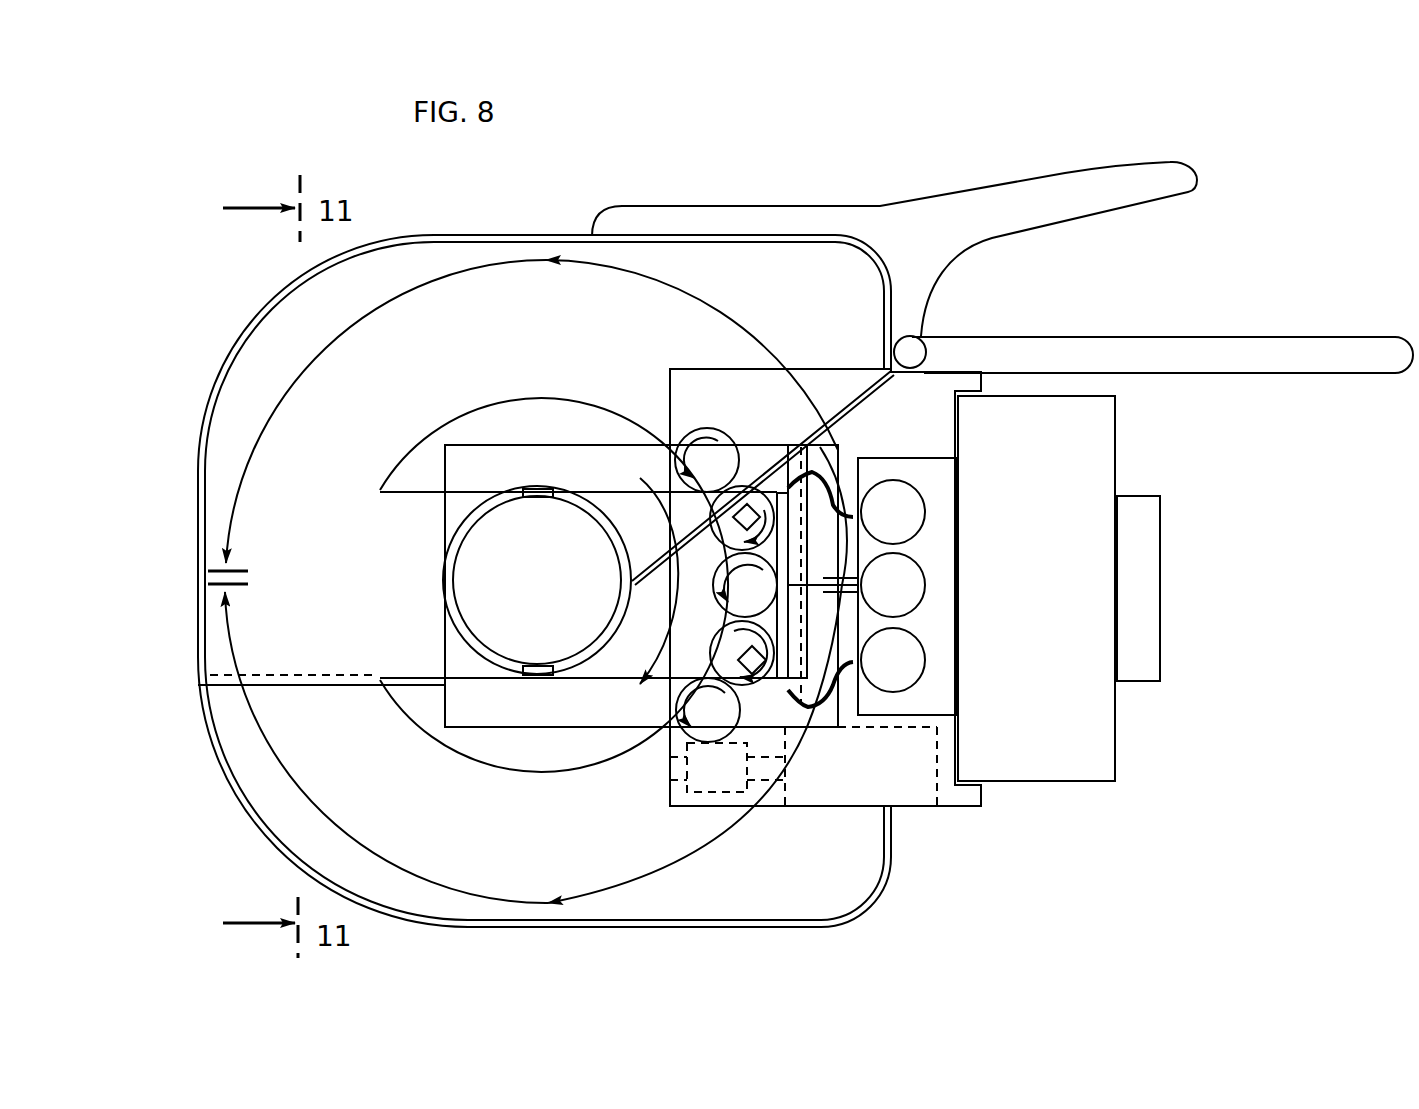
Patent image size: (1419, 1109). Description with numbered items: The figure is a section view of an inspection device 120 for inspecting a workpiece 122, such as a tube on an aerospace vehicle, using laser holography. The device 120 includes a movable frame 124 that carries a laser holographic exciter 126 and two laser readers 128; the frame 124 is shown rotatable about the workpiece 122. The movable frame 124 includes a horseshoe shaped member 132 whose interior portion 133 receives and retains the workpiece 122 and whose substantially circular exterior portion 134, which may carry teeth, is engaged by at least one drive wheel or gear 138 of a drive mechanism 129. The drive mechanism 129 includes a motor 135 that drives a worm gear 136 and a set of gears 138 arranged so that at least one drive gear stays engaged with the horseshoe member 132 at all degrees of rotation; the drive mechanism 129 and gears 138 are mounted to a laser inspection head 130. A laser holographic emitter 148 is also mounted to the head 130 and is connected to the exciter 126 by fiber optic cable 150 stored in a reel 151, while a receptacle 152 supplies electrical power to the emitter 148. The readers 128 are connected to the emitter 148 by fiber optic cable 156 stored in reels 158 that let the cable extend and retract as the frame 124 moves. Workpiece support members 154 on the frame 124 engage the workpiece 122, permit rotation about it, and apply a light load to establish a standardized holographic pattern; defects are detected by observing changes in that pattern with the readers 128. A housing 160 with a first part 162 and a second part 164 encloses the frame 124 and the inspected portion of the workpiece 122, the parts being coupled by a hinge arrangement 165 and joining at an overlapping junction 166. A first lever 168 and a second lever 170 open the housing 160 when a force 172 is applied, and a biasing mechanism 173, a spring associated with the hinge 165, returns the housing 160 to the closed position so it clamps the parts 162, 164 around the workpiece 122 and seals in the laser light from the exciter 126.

The inspection device 120 is at (840, 183).
The workpiece 122 is at (465, 637).
The movable frame 124 is at (658, 730).
The laser holographic exciter 126 is at (800, 612).
The laser reader 128 is at (752, 510).
The drive mechanism 129 is at (827, 817).
The laser inspection head 130 is at (970, 808).
The horseshoe shaped member 132 is at (407, 478).
The interior portion 133 is at (602, 527).
The exterior portion 134 is at (530, 397).
The motor 135 is at (910, 788).
The worm gear 136 is at (712, 780).
The drive wheel or gear 138 is at (680, 417).
The laser holographic emitter 148 is at (1093, 456).
The fiber optic cable 150 is at (858, 549).
The reel 151 is at (903, 580).
The receptacle 152 is at (1142, 546).
The workpiece support member 154 is at (535, 490).
The fiber optic cable 156 is at (816, 470).
The reel 158 is at (913, 510).
The housing 160 is at (258, 318).
The first part 162 is at (202, 577).
The second part 164 is at (273, 840).
The hinge arrangement 165 is at (926, 347).
The overlapping junction 166 is at (217, 681).
The first lever 168 is at (1105, 170).
The second lever 170 is at (1300, 347).
The force 172 is at (1070, 178).
The biasing mechanism 173 is at (927, 357).